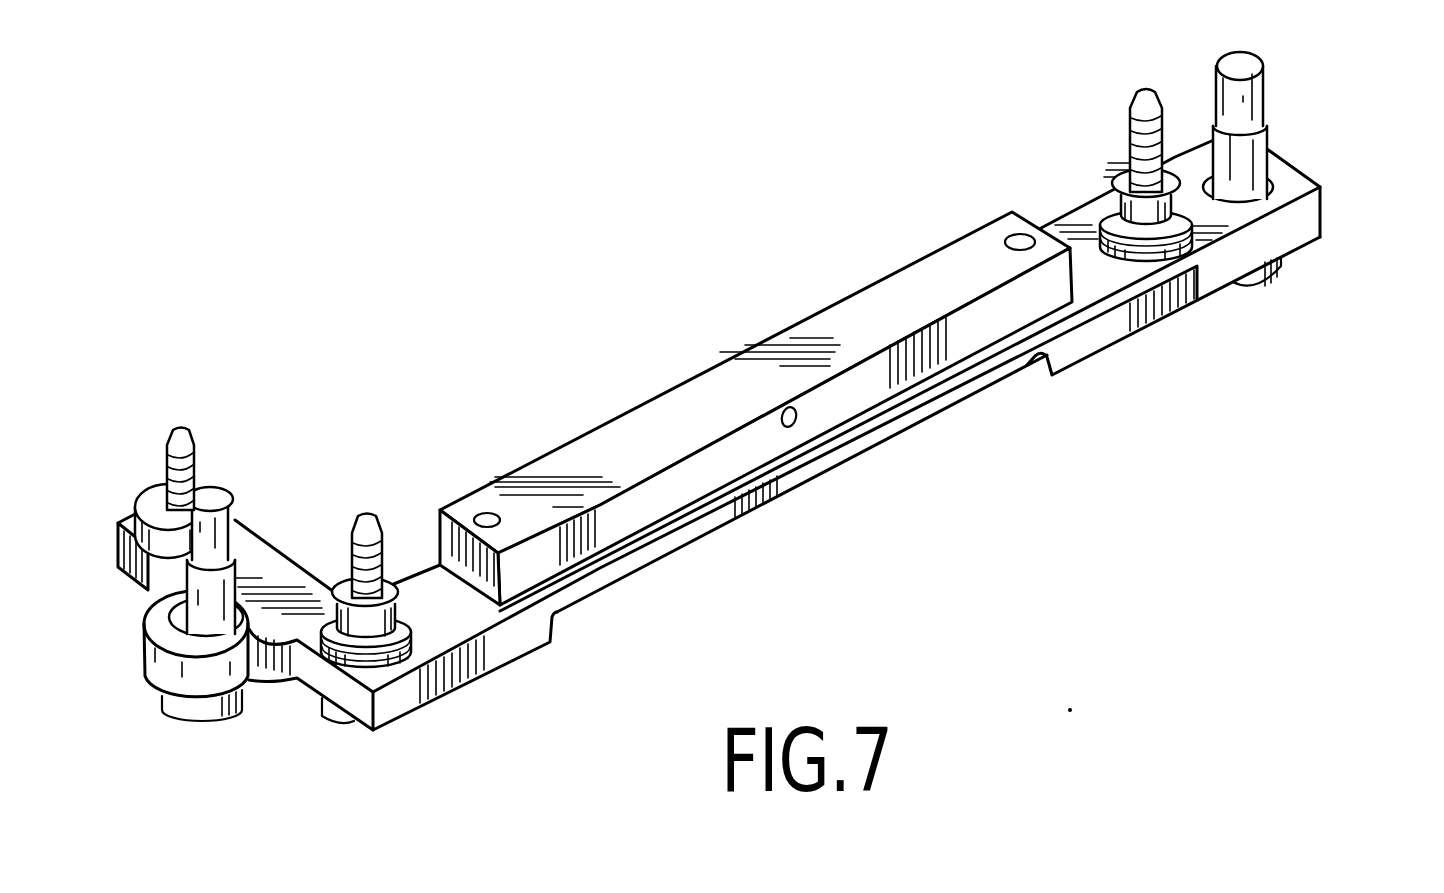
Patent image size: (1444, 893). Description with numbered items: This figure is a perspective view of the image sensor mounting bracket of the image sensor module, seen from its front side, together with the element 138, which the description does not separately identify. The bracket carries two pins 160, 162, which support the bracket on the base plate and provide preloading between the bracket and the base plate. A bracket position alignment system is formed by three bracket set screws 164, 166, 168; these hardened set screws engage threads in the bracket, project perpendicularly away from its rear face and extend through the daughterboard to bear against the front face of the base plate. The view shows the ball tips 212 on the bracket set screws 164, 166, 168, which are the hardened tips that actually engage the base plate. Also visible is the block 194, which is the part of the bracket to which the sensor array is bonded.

The mounting bar 138 is at (1318, 214).
The pin 160 is at (215, 722).
The pin 162 is at (1267, 139).
The bracket set screw 164 is at (1124, 168).
The bracket set screw 166 is at (390, 597).
The bracket set screw 168 is at (200, 470).
The block 194 is at (743, 432).
The ball tip 212 is at (185, 430).